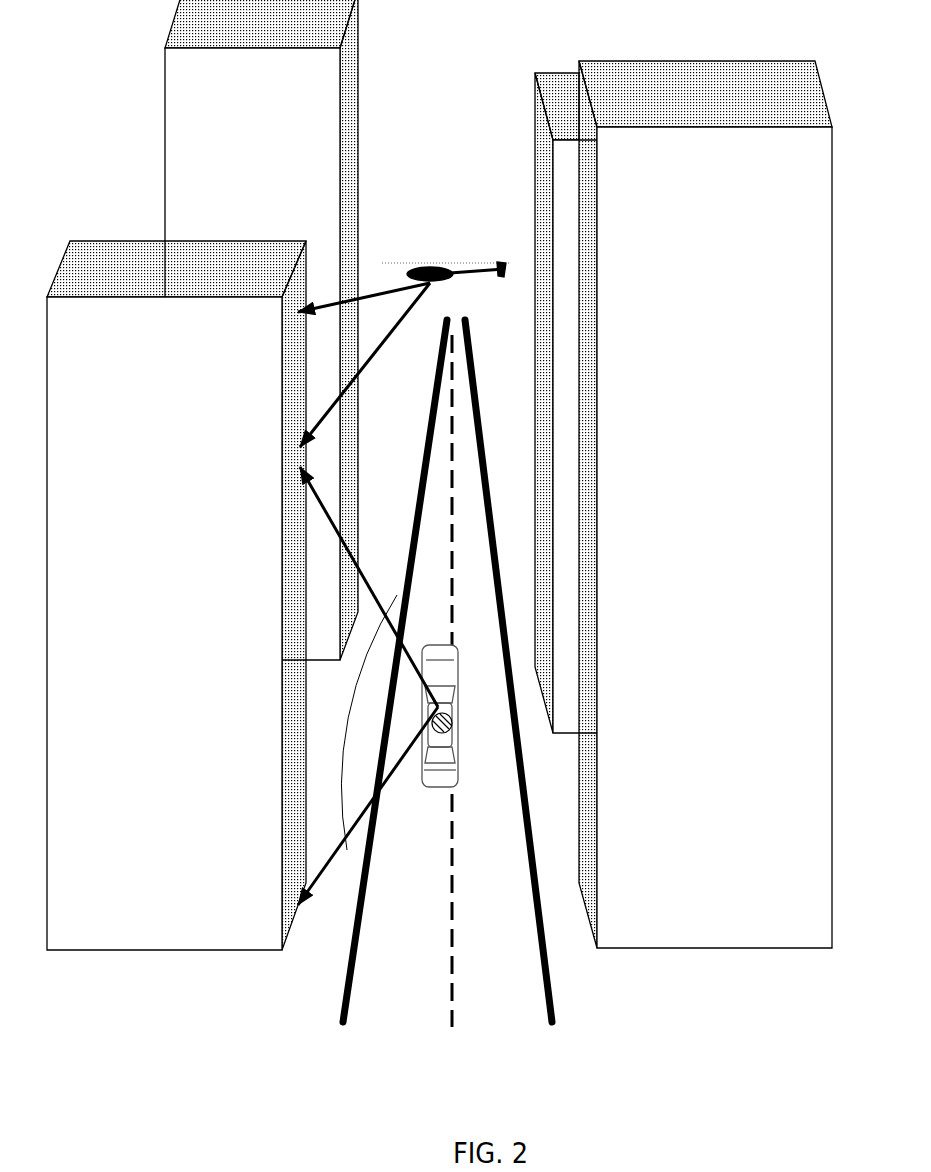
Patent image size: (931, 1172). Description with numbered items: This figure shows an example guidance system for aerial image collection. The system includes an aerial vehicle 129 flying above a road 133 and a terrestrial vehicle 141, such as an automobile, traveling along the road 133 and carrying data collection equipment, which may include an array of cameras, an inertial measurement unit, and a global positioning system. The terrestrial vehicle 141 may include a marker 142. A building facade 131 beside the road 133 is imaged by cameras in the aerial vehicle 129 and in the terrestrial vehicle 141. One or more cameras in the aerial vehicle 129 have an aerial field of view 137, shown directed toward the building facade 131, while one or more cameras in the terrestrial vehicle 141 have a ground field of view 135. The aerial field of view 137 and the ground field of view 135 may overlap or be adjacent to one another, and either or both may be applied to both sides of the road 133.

The aerial vehicle 129 is at (492, 265).
The building facade 131 is at (439, 475).
The road 133 is at (542, 950).
The ground field of view 135 is at (348, 723).
The aerial field of view 137 is at (364, 365).
The terrestrial vehicle 141 is at (432, 780).
The marker 142 is at (450, 723).